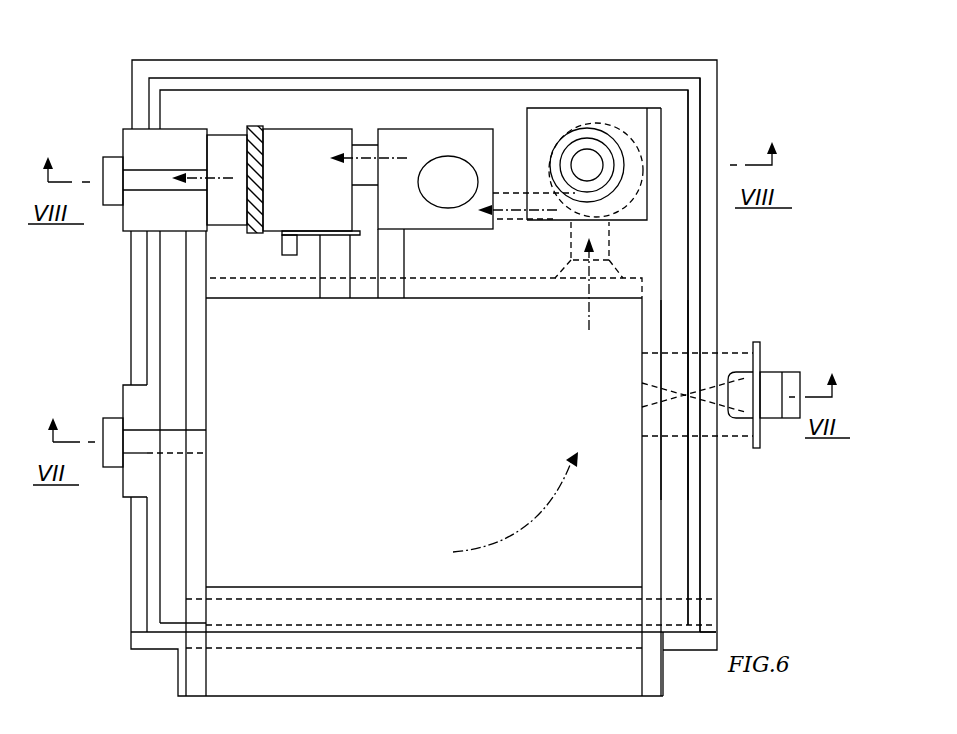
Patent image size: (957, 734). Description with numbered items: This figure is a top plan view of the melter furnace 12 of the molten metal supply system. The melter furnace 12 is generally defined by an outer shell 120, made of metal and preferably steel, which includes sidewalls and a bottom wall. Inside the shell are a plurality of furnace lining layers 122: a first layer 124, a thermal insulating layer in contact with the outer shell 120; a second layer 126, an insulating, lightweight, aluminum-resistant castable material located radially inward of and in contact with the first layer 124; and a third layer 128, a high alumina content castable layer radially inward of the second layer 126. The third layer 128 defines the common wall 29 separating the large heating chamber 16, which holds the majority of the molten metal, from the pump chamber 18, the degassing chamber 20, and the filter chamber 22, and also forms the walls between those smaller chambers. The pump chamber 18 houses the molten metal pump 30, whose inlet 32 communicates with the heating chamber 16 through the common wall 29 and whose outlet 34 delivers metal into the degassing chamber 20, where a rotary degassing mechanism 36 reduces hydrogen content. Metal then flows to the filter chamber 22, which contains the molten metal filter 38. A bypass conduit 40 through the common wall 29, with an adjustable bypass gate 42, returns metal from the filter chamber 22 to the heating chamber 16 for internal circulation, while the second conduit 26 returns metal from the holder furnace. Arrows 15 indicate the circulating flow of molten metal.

The melter furnace 12 is at (740, 82).
The arrows 15 is at (557, 495).
The heating chamber 16 is at (413, 459).
The pump chamber 18 is at (633, 120).
The degassing chamber 20 is at (397, 142).
The filter chamber 22 is at (290, 132).
The second conduit 26 is at (130, 445).
The common wall 29 is at (530, 260).
The molten metal pump 30 is at (627, 168).
The pump inlet 32 is at (610, 237).
The pump outlet 34 is at (497, 192).
The degassing mechanism 36 is at (450, 167).
The molten metal filter 38 is at (240, 140).
The bypass conduit 40 is at (352, 287).
The adjustable bypass gate 42 is at (308, 237).
The outer shell 120 is at (707, 317).
The furnace lining layers 122 is at (778, 478).
The first layer 124 is at (692, 565).
The second layer 126 is at (677, 529).
The third layer 128 is at (655, 505).